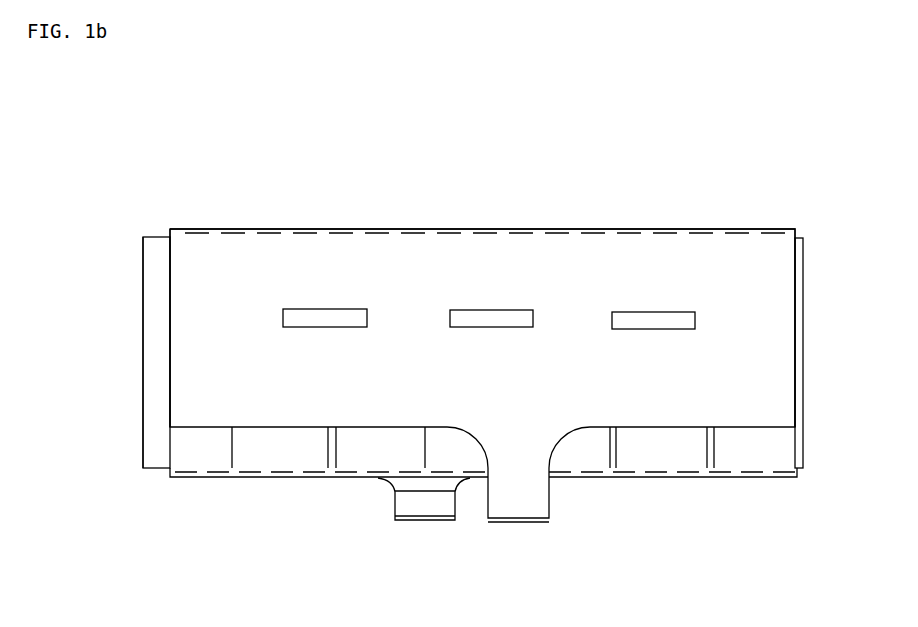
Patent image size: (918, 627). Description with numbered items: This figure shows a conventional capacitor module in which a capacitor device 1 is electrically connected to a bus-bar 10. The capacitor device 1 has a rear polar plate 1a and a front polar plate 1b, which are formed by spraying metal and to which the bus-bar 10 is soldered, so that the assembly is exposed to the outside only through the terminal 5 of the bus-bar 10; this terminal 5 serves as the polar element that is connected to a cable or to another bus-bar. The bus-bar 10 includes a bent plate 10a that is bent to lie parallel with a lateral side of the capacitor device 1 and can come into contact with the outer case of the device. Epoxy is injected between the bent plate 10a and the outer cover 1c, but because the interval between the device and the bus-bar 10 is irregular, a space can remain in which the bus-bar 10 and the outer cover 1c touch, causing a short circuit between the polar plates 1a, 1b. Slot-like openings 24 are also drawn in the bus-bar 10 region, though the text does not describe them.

The capacitor device 1 is at (787, 450).
The rear polar plate 1a is at (158, 229).
The front polar plate 1b is at (148, 470).
The outer cover 1c is at (155, 305).
The terminal 5 is at (500, 523).
The bus-bar 10 is at (624, 237).
The bent plate 10a is at (420, 255).
The slots 24 is at (305, 309).